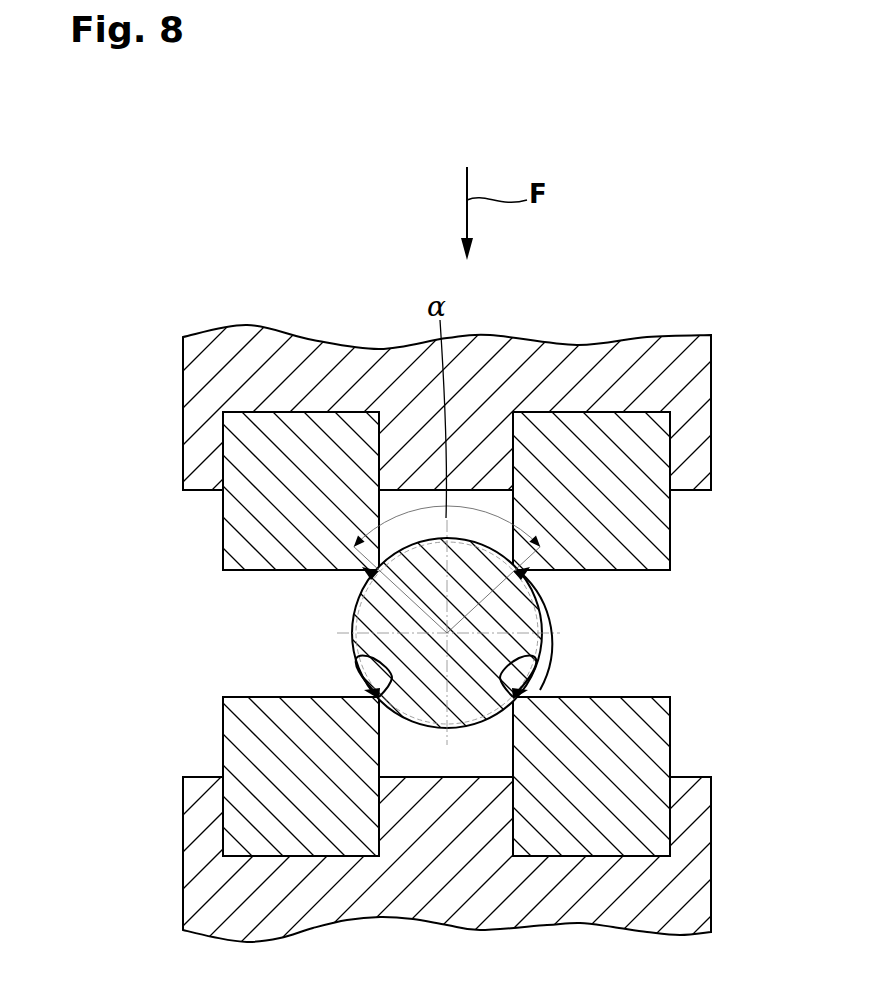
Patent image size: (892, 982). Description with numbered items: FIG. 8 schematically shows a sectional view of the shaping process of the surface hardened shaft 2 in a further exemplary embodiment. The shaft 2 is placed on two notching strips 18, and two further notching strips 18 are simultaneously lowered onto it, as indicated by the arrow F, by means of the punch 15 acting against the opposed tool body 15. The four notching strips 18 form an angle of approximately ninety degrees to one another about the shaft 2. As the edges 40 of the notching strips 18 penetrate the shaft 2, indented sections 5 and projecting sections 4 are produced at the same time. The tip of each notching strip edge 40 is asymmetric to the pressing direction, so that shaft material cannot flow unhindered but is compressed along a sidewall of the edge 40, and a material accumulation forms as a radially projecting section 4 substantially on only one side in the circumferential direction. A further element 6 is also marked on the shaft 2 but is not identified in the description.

The surface hardened shaft 2 is at (560, 641).
The projecting section 4 is at (366, 574).
The indented section 5 is at (375, 569).
The ball surface 6 is at (553, 602).
The punch 15 is at (703, 340).
The notching strip 18 is at (230, 535).
The notching strip edge 40 is at (360, 660).